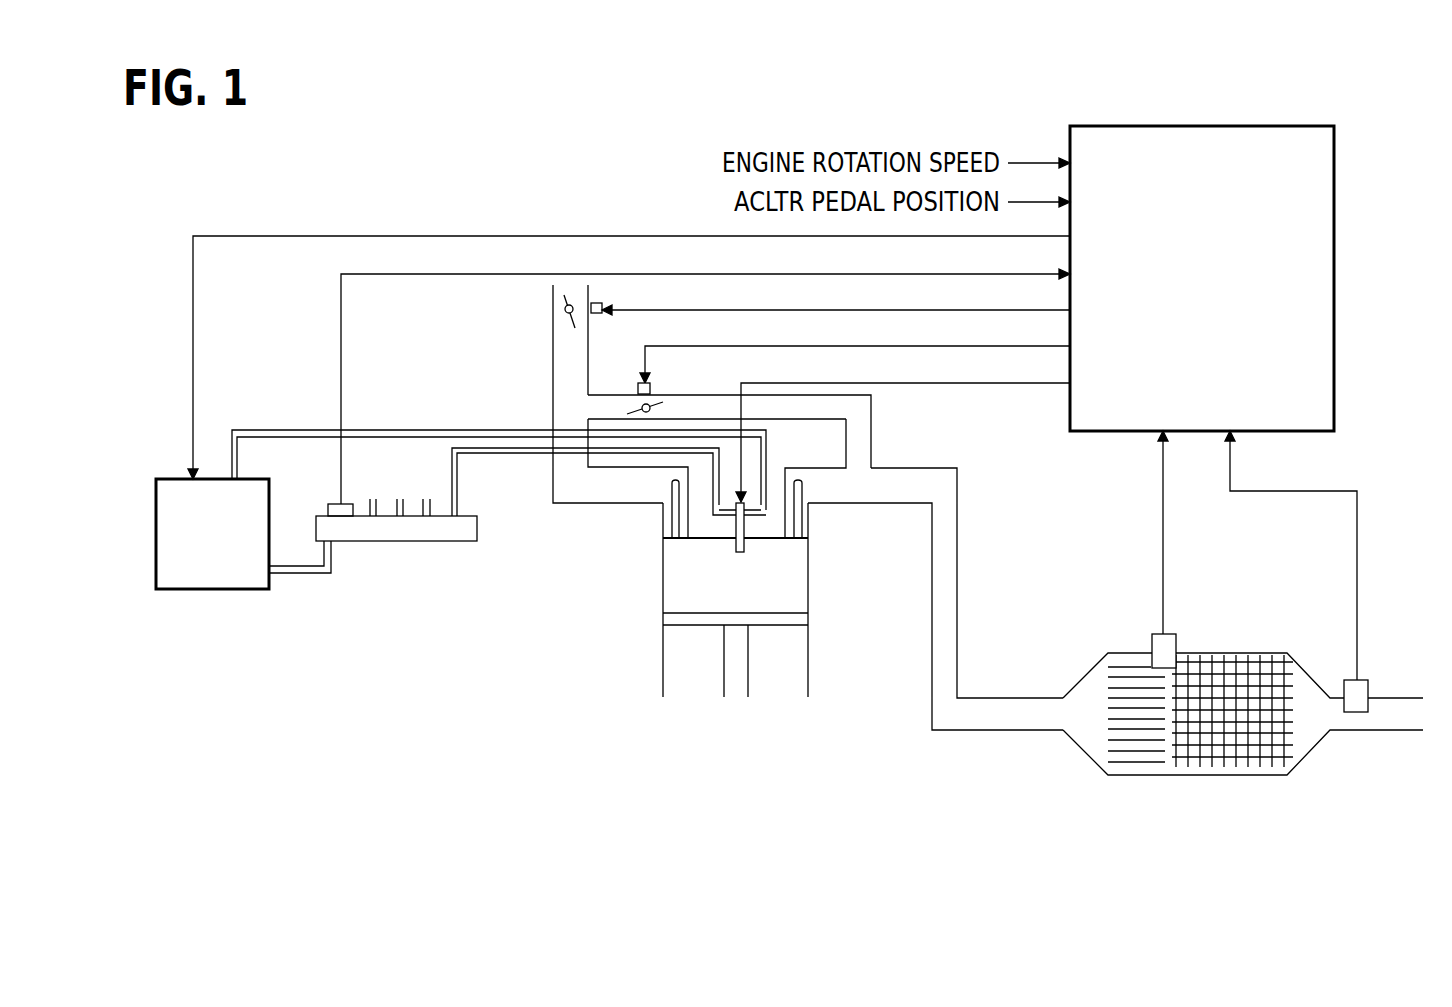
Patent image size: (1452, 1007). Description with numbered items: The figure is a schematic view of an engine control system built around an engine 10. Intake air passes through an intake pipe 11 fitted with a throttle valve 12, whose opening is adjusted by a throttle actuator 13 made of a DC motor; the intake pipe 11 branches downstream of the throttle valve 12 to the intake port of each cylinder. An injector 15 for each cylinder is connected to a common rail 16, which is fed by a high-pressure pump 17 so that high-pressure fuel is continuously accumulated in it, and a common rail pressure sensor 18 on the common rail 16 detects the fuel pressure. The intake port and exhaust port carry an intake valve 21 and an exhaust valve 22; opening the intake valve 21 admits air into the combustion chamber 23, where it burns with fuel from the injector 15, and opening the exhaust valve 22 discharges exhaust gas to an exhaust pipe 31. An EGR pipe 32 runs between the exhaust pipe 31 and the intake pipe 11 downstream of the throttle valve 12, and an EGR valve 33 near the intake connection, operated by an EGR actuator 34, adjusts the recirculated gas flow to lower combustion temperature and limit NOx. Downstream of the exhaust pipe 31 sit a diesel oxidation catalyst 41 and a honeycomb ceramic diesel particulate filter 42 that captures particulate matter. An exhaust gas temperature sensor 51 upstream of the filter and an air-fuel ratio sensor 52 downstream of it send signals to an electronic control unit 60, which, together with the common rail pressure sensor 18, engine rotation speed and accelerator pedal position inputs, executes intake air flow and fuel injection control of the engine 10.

The engine 10 is at (627, 600).
The intake pipe 11 is at (578, 505).
The throttle valve 12 is at (565, 305).
The throttle actuator 13 is at (596, 313).
The injector 15 is at (742, 553).
The common rail 16 is at (477, 527).
The high-pressure pump 17 is at (237, 589).
The common rail pressure sensor 18 is at (333, 504).
The intake valve 21 is at (668, 517).
The exhaust valve 22 is at (805, 521).
The combustion chamber 23 is at (706, 600).
The exhaust pipe 31 is at (893, 506).
The EGR pipe 32 is at (872, 428).
The EGR valve 33 is at (635, 405).
The EGR actuator 34 is at (652, 387).
The diesel oxidation catalyst 41 is at (1132, 767).
The diesel particulate filter 42 is at (1233, 763).
The exhaust gas temperature sensor 51 is at (1170, 633).
The air-fuel ratio sensor 52 is at (1363, 680).
The electronic control unit 60 is at (1334, 200).